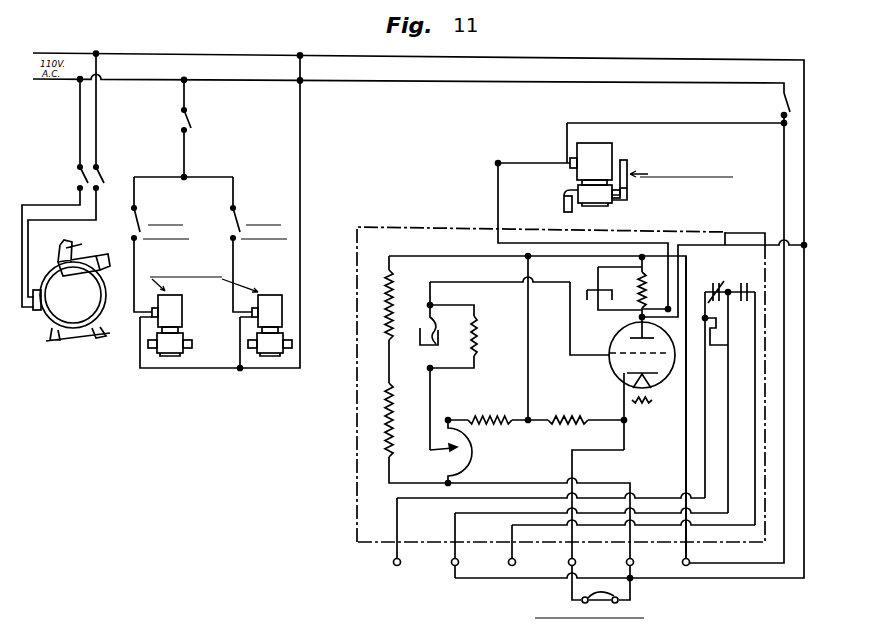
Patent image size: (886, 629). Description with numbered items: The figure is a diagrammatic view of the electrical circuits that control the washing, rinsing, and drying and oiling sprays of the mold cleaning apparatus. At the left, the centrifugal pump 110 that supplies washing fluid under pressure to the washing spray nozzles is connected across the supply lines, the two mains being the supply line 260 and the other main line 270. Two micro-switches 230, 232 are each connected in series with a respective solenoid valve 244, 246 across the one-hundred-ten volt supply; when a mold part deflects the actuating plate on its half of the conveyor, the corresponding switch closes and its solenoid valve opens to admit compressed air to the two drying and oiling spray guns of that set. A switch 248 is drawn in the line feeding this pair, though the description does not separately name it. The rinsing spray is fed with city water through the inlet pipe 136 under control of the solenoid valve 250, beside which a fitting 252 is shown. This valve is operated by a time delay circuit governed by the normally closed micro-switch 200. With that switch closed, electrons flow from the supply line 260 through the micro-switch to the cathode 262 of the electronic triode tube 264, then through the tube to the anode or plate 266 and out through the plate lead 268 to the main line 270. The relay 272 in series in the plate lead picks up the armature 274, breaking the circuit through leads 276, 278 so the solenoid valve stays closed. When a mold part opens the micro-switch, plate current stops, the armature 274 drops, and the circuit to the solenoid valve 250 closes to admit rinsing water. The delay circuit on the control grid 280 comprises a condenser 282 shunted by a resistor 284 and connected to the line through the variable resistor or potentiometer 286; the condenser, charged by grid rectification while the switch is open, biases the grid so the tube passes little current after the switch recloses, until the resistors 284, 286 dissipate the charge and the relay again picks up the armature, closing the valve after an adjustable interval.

The centrifugal pump 110 is at (56, 314).
The rinsing spray inlet pipe 136 is at (624, 160).
The micro-switch 200 is at (622, 598).
The micro-switch 230 is at (141, 214).
The micro-switch 232 is at (245, 213).
The solenoid valve 244 is at (183, 318).
The solenoid valve 246 is at (271, 295).
The switch 248 is at (197, 127).
The solenoid valve 250 is at (591, 152).
The pipe fitting 252 is at (561, 208).
The supply line 260 is at (503, 58).
The cathode 262 is at (620, 378).
The electronic triode tube 264 is at (612, 386).
The anode or plate 266 is at (618, 330).
The plate lead 268 is at (686, 459).
The main line 270 is at (417, 84).
The relay 272 is at (634, 298).
The armature 274 is at (657, 302).
The lead 276 is at (727, 233).
The lead 278 is at (647, 124).
The control grid 280 is at (655, 385).
The condenser 282 is at (447, 366).
The resistor 284 is at (478, 337).
The variable resistor or potentiometer 286 is at (469, 452).